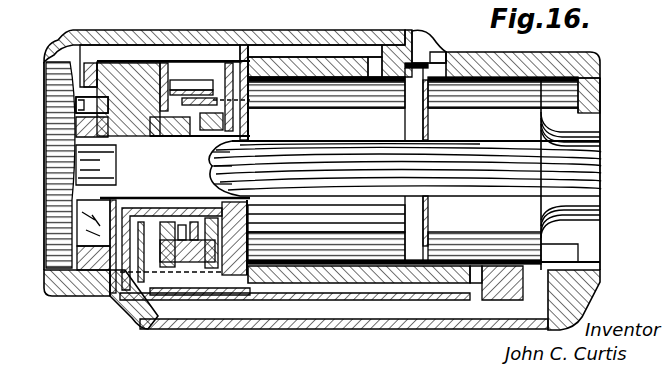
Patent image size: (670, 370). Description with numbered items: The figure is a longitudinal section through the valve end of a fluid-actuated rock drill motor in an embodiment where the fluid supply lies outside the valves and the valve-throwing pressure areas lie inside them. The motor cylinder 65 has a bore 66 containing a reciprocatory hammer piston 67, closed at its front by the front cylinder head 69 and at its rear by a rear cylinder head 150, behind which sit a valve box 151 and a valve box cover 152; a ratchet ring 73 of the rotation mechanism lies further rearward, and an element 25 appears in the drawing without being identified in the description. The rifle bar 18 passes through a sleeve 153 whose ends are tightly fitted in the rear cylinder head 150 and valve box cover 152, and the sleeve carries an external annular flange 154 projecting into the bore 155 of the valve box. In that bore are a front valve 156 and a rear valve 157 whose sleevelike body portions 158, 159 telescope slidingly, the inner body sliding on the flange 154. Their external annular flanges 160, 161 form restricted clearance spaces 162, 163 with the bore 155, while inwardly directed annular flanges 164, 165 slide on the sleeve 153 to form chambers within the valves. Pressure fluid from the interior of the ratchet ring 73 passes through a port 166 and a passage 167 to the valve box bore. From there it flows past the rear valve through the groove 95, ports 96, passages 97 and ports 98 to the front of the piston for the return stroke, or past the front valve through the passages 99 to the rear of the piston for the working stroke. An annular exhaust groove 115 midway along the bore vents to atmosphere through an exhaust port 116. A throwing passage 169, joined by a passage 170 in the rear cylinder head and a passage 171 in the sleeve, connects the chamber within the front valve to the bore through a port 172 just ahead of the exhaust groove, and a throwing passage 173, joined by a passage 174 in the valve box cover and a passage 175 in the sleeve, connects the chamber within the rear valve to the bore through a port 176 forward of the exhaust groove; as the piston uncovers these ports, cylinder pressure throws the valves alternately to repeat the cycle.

The rifle bar 18 is at (343, 158).
The shaft 25 is at (80, 160).
The motor cylinder 65 is at (375, 60).
The bore 66 is at (320, 266).
The reciprocatory hammer piston 67 is at (518, 160).
The front cylinder head 69 is at (582, 100).
The ratchet ring 73 is at (46, 77).
The groove 95 is at (125, 231).
The ports 96 is at (128, 300).
The passages 97 is at (367, 312).
The ports 98 is at (540, 286).
The passages 99 is at (252, 228).
The annular exhaust groove 115 is at (438, 52).
The exhaust port 116 is at (432, 40).
The rear cylinder head 150 is at (247, 214).
The valve box 151 is at (189, 80).
The valve box cover 152 is at (128, 52).
The sleeve 153 is at (230, 285).
The external annular flange 154 is at (188, 300).
The bore 155 is at (205, 98).
The front valve 156 is at (244, 50).
The rear valve 157 is at (150, 70).
The sleevelike body portion 158 is at (196, 290).
The sleevelike body portion 159 is at (158, 300).
The external annular flange 160 is at (220, 296).
The external annular flange 161 is at (140, 295).
The restricted clearance space 162 is at (228, 64).
The restricted clearance space 163 is at (165, 66).
The inwardly directed annular flange 164 is at (228, 117).
The inwardly directed annular flange 165 is at (212, 148).
The port 166 is at (60, 44).
The passage 167 is at (103, 50).
The throwing passage 169 is at (335, 55).
The passage 170 is at (280, 55).
The passage 171 is at (212, 165).
The port 172 is at (396, 50).
The throwing passage 173 is at (332, 289).
The passage 174 is at (100, 292).
The passage 175 is at (214, 182).
The port 176 is at (477, 282).